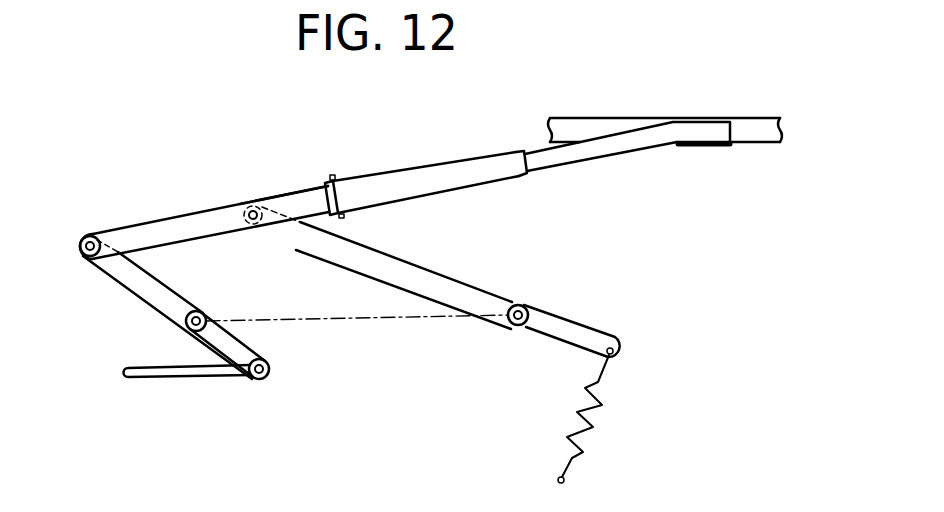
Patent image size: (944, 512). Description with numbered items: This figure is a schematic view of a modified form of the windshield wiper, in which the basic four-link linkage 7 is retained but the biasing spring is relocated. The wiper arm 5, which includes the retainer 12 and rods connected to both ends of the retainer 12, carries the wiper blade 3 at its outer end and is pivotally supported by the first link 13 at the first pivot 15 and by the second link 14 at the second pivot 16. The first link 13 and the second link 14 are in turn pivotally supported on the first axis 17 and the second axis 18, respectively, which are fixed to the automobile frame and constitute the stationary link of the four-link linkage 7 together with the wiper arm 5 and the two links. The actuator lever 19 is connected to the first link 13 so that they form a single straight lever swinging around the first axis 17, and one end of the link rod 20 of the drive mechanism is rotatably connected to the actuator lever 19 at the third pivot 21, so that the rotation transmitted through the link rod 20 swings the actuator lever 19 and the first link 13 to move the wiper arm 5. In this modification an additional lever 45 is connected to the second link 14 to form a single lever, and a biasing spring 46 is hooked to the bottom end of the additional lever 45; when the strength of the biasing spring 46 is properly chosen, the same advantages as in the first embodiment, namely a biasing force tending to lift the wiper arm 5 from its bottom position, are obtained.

The wiper blade 3 is at (590, 118).
The wiper arm 5 is at (404, 161).
The four-link linkage 7 is at (157, 217).
The retainer 12 is at (290, 193).
The first link 13 is at (158, 285).
The second link 14 is at (410, 258).
The first pivot 15 is at (88, 237).
The second pivot 16 is at (250, 207).
The first axis 17 is at (204, 312).
The second axis 18 is at (522, 306).
The actuator lever 19 is at (250, 349).
The link rod 20 is at (182, 378).
The third pivot 21 is at (271, 374).
The additional lever 45 is at (582, 325).
The biasing spring 46 is at (592, 424).